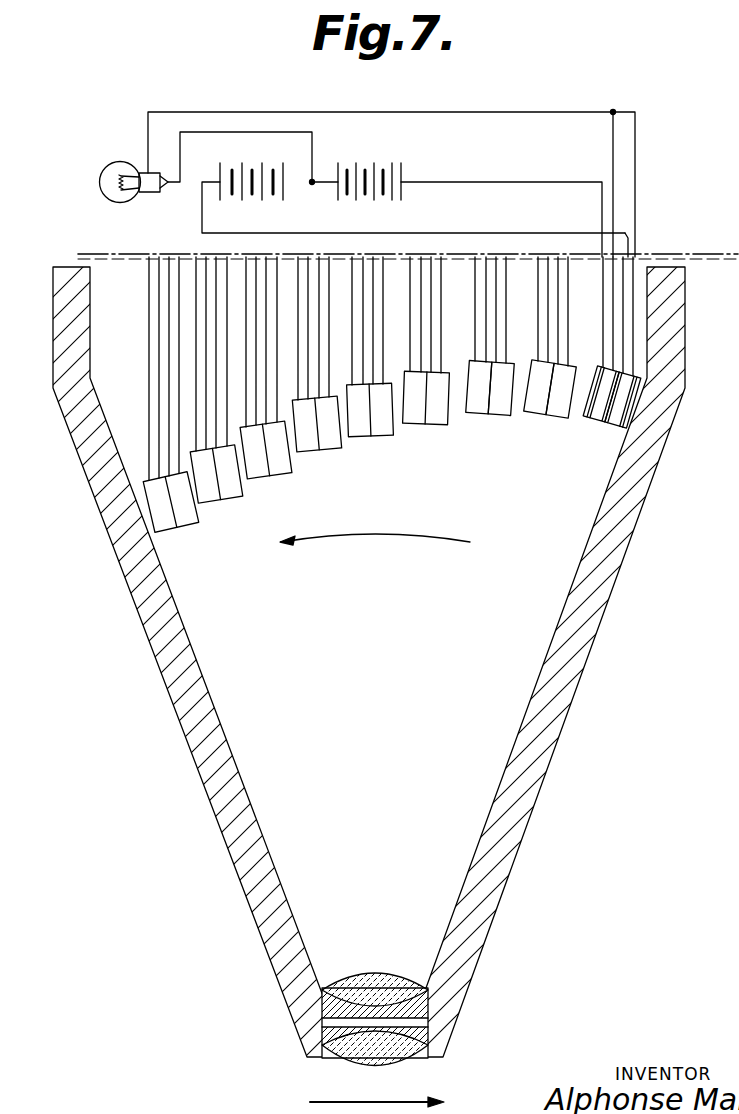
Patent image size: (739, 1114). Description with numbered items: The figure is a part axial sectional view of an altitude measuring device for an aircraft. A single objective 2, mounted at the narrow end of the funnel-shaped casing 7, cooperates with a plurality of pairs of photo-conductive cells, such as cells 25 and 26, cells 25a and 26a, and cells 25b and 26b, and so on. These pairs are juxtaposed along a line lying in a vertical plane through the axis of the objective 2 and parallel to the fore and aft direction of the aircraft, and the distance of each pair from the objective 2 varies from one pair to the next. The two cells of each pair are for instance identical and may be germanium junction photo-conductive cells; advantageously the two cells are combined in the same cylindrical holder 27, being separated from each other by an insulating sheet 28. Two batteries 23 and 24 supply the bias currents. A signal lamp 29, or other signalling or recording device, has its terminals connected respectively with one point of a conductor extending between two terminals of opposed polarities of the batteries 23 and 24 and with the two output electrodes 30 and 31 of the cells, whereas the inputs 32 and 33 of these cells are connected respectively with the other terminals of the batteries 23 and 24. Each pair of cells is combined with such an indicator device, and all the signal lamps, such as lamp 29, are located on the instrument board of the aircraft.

The objective 2 is at (427, 1058).
The hopper / funnel-shaped casing 7 is at (83, 443).
The battery 23 is at (372, 169).
The battery 24 is at (256, 168).
The cell 25 is at (612, 426).
The cell 25a is at (560, 418).
The cell 25b is at (500, 417).
The cell 26 is at (590, 418).
The cell 26a is at (532, 412).
The cell 26b is at (473, 414).
The cylindrical holder 27 is at (632, 408).
The insulating sheet 28 is at (620, 381).
The signal lamp 29 is at (124, 162).
The output electrode 30 is at (613, 220).
The output electrode 31 is at (636, 245).
The input 32 is at (602, 198).
The input 33 is at (628, 237).